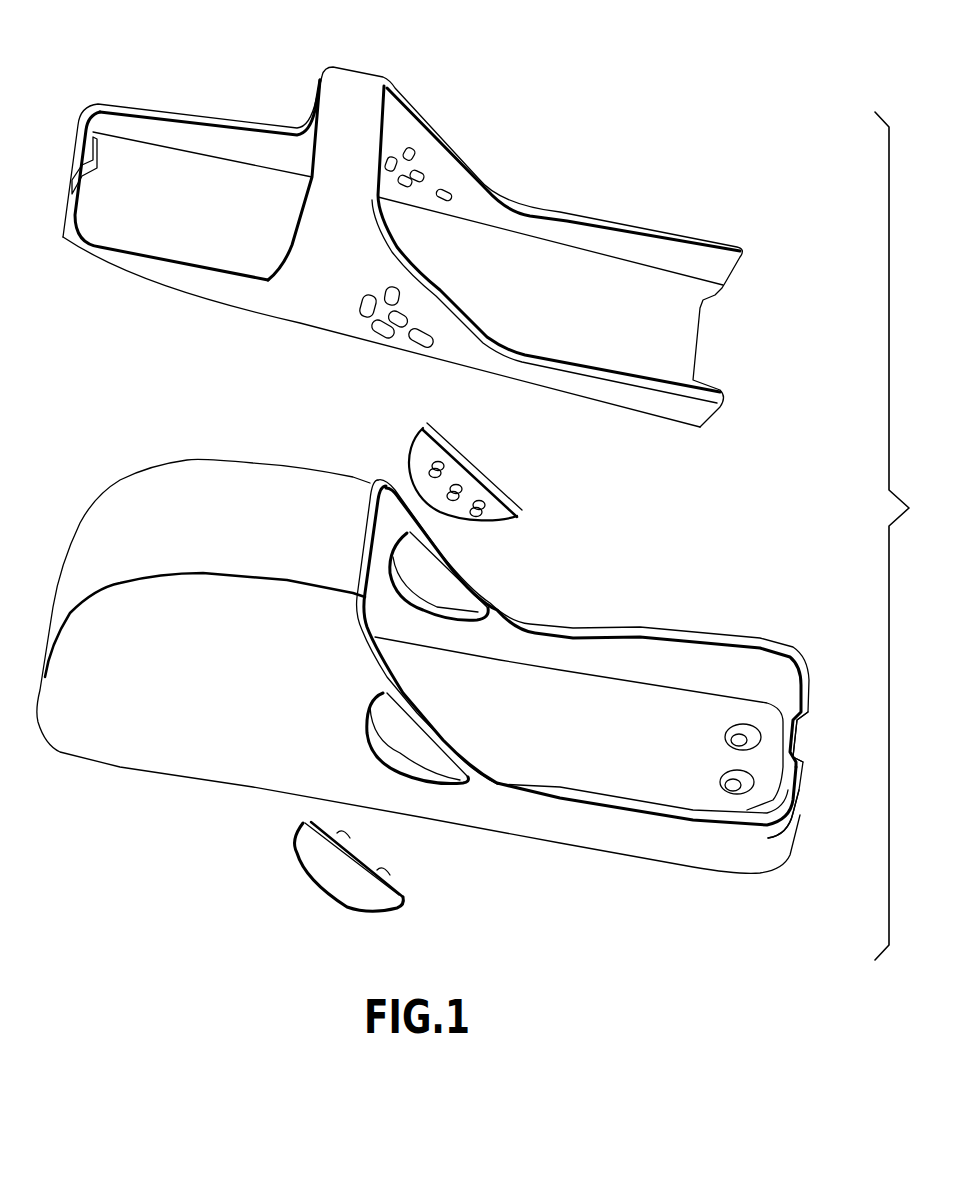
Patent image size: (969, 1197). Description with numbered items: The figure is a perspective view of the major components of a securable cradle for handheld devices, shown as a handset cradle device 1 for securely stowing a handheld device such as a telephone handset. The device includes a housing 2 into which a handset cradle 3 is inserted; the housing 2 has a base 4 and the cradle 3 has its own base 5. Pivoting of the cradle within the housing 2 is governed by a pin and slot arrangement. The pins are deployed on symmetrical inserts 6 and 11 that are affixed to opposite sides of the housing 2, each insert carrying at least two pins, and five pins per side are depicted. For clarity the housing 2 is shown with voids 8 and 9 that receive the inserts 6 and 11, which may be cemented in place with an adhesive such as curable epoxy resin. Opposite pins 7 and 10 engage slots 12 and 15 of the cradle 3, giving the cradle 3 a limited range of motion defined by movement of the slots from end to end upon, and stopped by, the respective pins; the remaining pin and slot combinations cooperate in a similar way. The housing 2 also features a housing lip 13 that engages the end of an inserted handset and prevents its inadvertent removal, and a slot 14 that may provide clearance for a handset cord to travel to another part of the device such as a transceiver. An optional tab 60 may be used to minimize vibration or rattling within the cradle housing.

The handset cradle device 1 is at (188, 808).
The housing 2 is at (158, 726).
The handset cradle 3 is at (474, 96).
The base 4 is at (600, 697).
The base 5 is at (611, 277).
The insert 6 is at (373, 905).
The pin 7 is at (392, 877).
The void 8 is at (397, 733).
The void 9 is at (437, 592).
The pin 10 is at (479, 513).
The insert 11 is at (506, 492).
The slot 12 is at (433, 351).
The housing lip 13 is at (804, 772).
The slot 14 is at (799, 745).
The slot 15 is at (448, 192).
The tab 60 is at (84, 152).